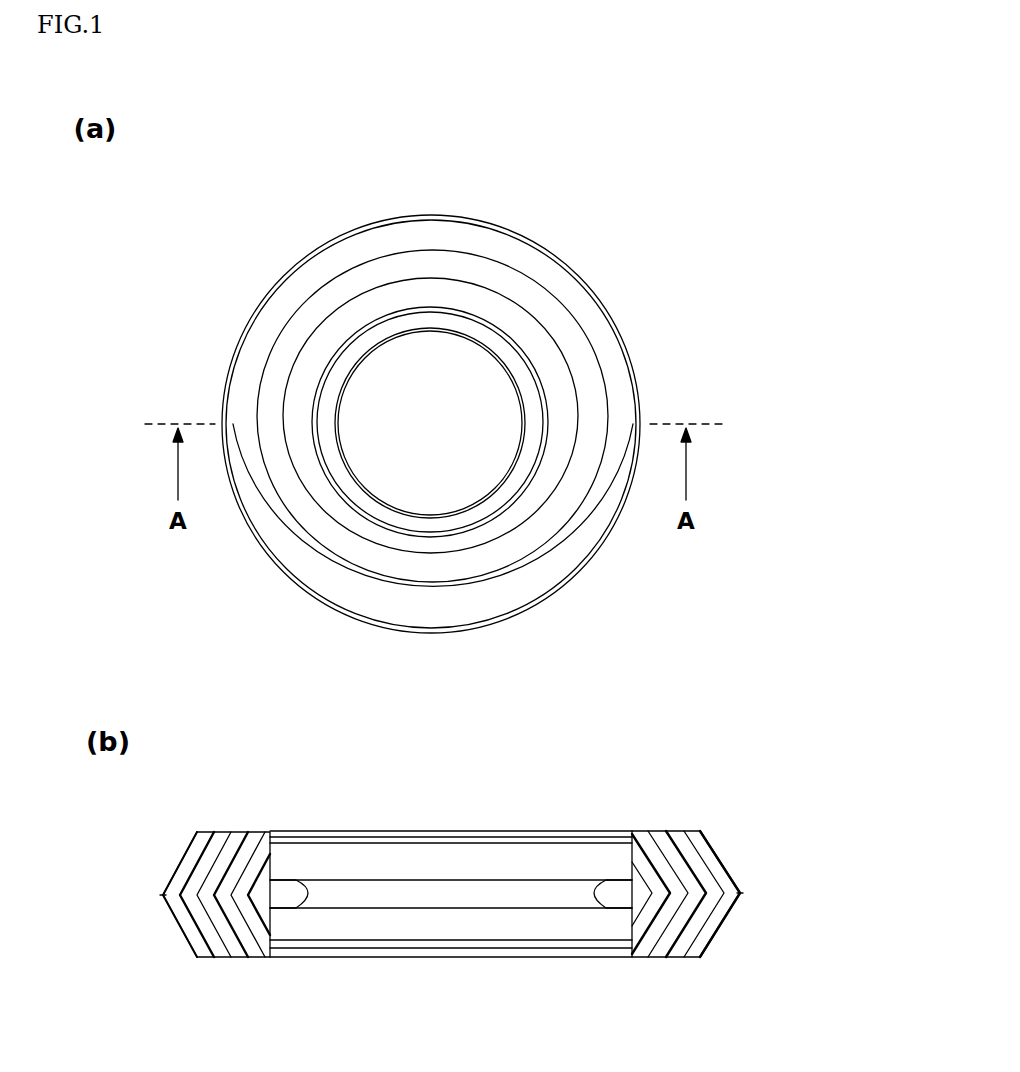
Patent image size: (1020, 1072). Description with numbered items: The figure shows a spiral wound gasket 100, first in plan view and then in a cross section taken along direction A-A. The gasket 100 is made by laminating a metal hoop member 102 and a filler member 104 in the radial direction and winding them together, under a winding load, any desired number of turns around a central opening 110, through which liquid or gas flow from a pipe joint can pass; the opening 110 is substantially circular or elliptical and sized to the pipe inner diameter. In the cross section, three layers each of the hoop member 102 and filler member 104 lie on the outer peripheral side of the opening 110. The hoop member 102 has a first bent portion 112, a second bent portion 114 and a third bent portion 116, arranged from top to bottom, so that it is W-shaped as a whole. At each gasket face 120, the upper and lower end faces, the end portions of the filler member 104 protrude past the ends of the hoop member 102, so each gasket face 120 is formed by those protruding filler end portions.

The spiral wound gasket 100 is at (604, 244).
The hoop member 102 is at (380, 318).
The filler member 104 is at (353, 318).
The opening 110 is at (420, 517).
The first bent portion 112 is at (160, 868).
The second bent portion 114 is at (195, 895).
The third bent portion 116 is at (165, 923).
The gasket face 120 is at (283, 158).